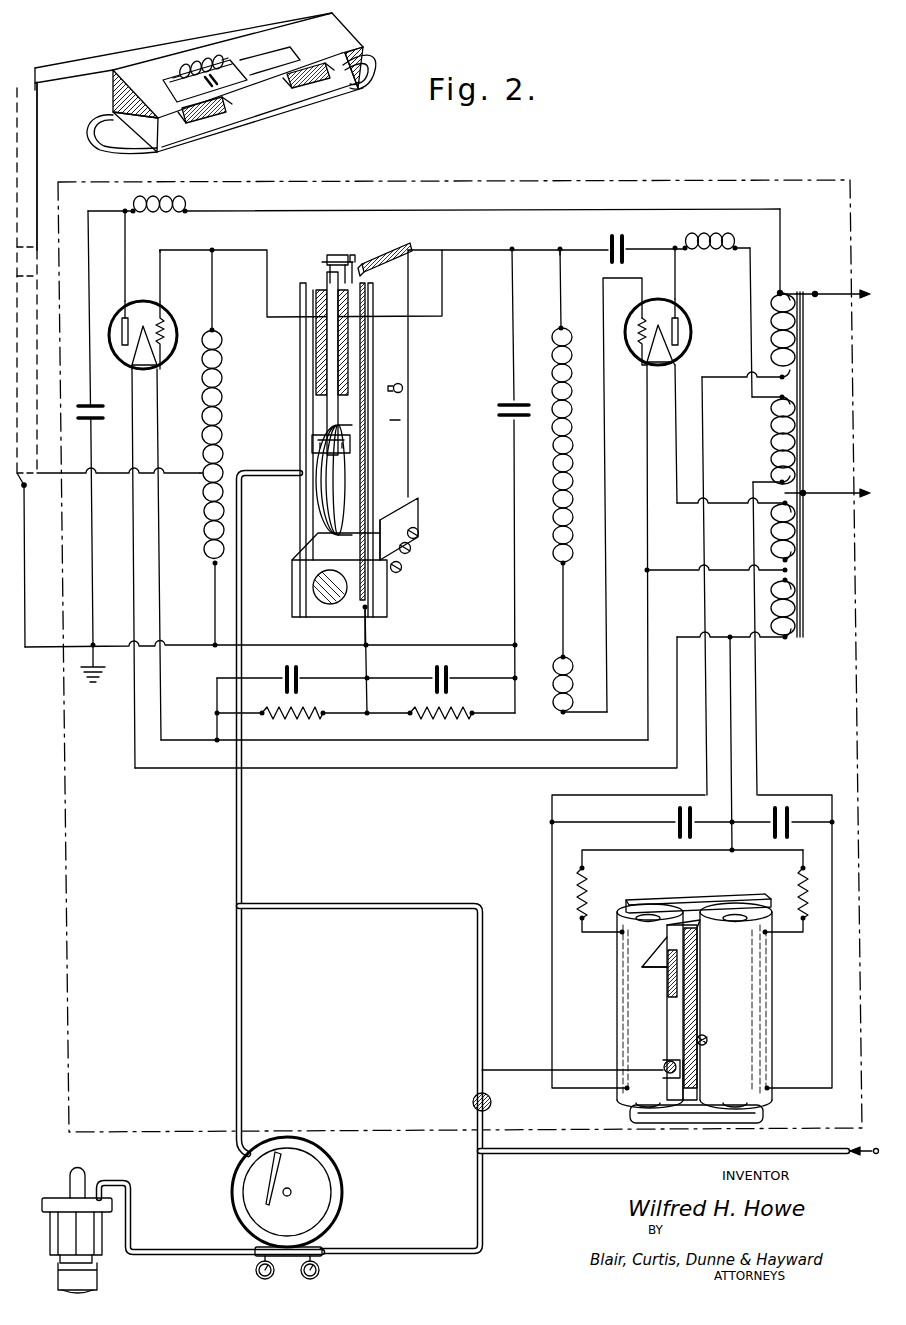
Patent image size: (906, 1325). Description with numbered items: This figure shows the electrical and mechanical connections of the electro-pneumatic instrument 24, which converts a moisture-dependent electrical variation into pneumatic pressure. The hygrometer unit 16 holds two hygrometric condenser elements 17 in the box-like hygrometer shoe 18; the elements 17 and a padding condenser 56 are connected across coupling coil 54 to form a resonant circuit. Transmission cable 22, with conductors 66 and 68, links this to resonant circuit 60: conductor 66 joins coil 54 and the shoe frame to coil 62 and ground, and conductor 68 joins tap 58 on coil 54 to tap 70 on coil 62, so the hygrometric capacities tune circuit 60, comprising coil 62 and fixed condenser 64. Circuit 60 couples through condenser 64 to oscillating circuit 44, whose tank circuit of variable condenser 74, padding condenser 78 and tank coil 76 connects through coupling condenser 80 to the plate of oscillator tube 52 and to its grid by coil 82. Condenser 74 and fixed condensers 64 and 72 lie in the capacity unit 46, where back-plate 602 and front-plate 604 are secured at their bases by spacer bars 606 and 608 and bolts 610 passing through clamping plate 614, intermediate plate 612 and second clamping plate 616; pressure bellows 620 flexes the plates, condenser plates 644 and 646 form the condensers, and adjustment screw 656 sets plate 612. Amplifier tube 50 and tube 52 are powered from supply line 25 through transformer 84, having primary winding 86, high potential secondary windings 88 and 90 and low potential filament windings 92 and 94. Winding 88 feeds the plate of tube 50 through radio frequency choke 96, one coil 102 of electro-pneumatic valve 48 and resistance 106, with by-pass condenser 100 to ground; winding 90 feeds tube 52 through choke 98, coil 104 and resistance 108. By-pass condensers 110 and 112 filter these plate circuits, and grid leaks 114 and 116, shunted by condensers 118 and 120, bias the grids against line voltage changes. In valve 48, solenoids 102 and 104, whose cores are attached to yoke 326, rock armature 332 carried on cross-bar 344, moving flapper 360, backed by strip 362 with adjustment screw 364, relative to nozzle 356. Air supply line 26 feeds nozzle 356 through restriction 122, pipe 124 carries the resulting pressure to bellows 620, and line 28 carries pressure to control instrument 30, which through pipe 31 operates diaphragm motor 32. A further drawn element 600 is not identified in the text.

The hygrometer unit 16 is at (104, 93).
The hygrometric condenser elements 17 is at (206, 116).
The hygrometer shoe 18 is at (305, 38).
The transmission cable 22 is at (48, 272).
The electro-pneumatic instrument 24 is at (56, 880).
The alternating current supply line 25 is at (837, 464).
The air pressure supply line 26 is at (577, 1155).
The pressure line 28 is at (236, 1020).
The control instrument 30 is at (338, 1168).
The pipe 31 is at (176, 1250).
The diaphragm motor 32 is at (57, 1204).
The oscillating circuit 44 is at (577, 326).
The capacity unit 46 is at (412, 463).
The electro-pneumatic valve 48 is at (594, 958).
The amplifier tube 50 is at (118, 316).
The oscillator tube 52 is at (686, 320).
The coupling coil 54 is at (185, 68).
The padding condenser 56 is at (224, 82).
The tap 58 is at (199, 62).
The resonant circuit 60 is at (240, 336).
The coil 62 is at (203, 510).
The fixed condenser 64 is at (326, 268).
The conductor 66 is at (25, 545).
The conductor 68 is at (38, 486).
The tap 70 is at (202, 470).
The fixed condenser 72 is at (350, 260).
The variable condenser 74 is at (400, 256).
The tank coil 76 is at (574, 476).
The semi-fixed padding condenser 78 is at (500, 416).
The coupling condenser 80 is at (616, 236).
The grid coil 82 is at (574, 667).
The transformer 84 is at (809, 291).
The primary winding 86 is at (803, 478).
The high potential secondary winding 88 is at (770, 340).
The high potential secondary winding 90 is at (770, 430).
The low potential secondary winding 92 is at (770, 530).
The low potential secondary winding 94 is at (770, 603).
The radio frequency choke 96 is at (138, 203).
The radio frequency choke 98 is at (712, 238).
The by-pass condenser 100 is at (106, 414).
The solenoid coil 102 is at (632, 1004).
The solenoid coil 104 is at (752, 1000).
The resistance 106 is at (586, 884).
The resistance 108 is at (800, 885).
The by-pass condenser 110 is at (682, 800).
The by-pass condenser 112 is at (786, 806).
The grid leak 114 is at (302, 720).
The grid leak 116 is at (434, 721).
The fixed condenser 118 is at (300, 665).
The fixed condenser 120 is at (436, 665).
The restriction 122 is at (473, 1100).
The pipe 124 is at (358, 904).
The yoke 326 is at (765, 1117).
The armature 332 is at (716, 886).
The cross-bar 344 is at (700, 930).
The nozzle 356 is at (666, 1063).
The flapper 360 is at (683, 1068).
The rigid strip 362 is at (692, 997).
The adjustment screw 364 is at (707, 1040).
The clamp 600 is at (331, 444).
The back-plate 602 is at (308, 434).
The front-plate 604 is at (399, 422).
The spacer bar 606 is at (322, 612).
The spacer bar 608 is at (378, 592).
The bolts 610 is at (419, 548).
The intermediate plate 612 is at (365, 447).
The clamping plate 614 is at (420, 514).
The second clamping plate 616 is at (292, 585).
The bellows 620 is at (330, 487).
The condenser plate 644 is at (352, 342).
The condenser plate 646 is at (316, 351).
The adjustment screw 656 is at (404, 388).